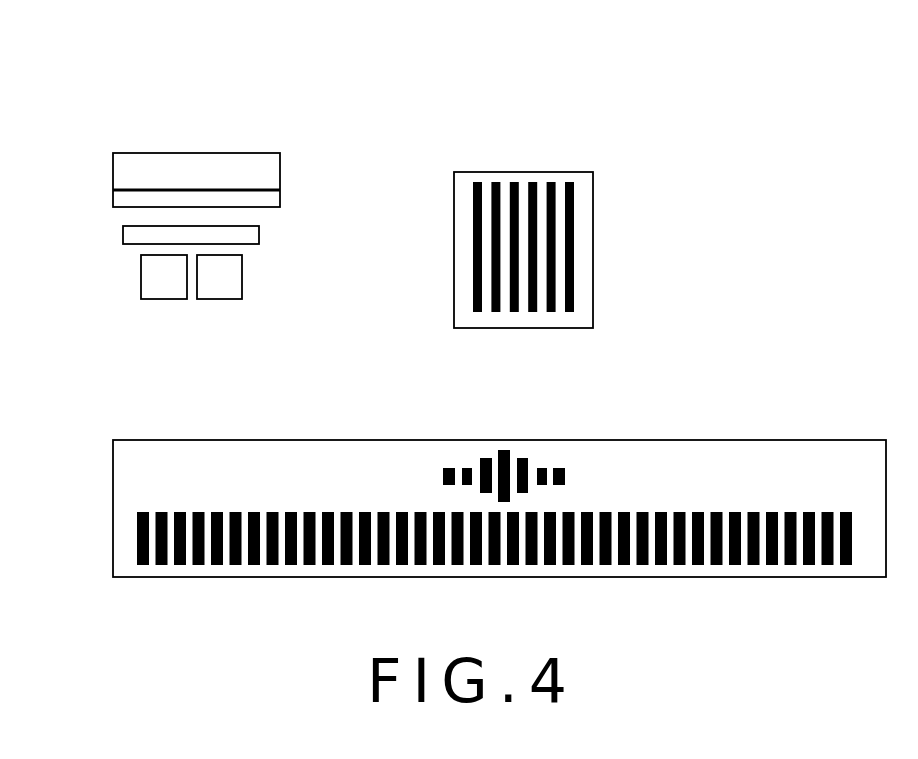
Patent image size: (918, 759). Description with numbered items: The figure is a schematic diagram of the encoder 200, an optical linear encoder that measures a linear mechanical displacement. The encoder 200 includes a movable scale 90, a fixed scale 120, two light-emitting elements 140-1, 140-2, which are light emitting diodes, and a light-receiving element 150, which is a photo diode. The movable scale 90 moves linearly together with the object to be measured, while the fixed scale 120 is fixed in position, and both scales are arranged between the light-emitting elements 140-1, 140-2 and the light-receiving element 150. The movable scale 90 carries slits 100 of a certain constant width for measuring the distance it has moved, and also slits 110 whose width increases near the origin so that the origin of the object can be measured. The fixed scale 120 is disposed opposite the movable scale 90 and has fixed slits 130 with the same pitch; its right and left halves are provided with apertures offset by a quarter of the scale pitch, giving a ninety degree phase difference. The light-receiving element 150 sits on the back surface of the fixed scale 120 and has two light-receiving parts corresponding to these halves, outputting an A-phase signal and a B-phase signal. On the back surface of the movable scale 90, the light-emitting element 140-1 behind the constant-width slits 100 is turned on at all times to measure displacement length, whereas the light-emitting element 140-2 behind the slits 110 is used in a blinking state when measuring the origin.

The encoder 200 is at (129, 107).
The light-receiving element 150 is at (219, 151).
The fixed scale 120 is at (284, 192).
The fixed slits 130 is at (551, 179).
The light-emitting element 140-1 is at (127, 304).
The light-emitting element 140-2 is at (214, 303).
The movable scale 90 is at (264, 253).
The slits 100 is at (274, 514).
The slits 110 is at (559, 466).